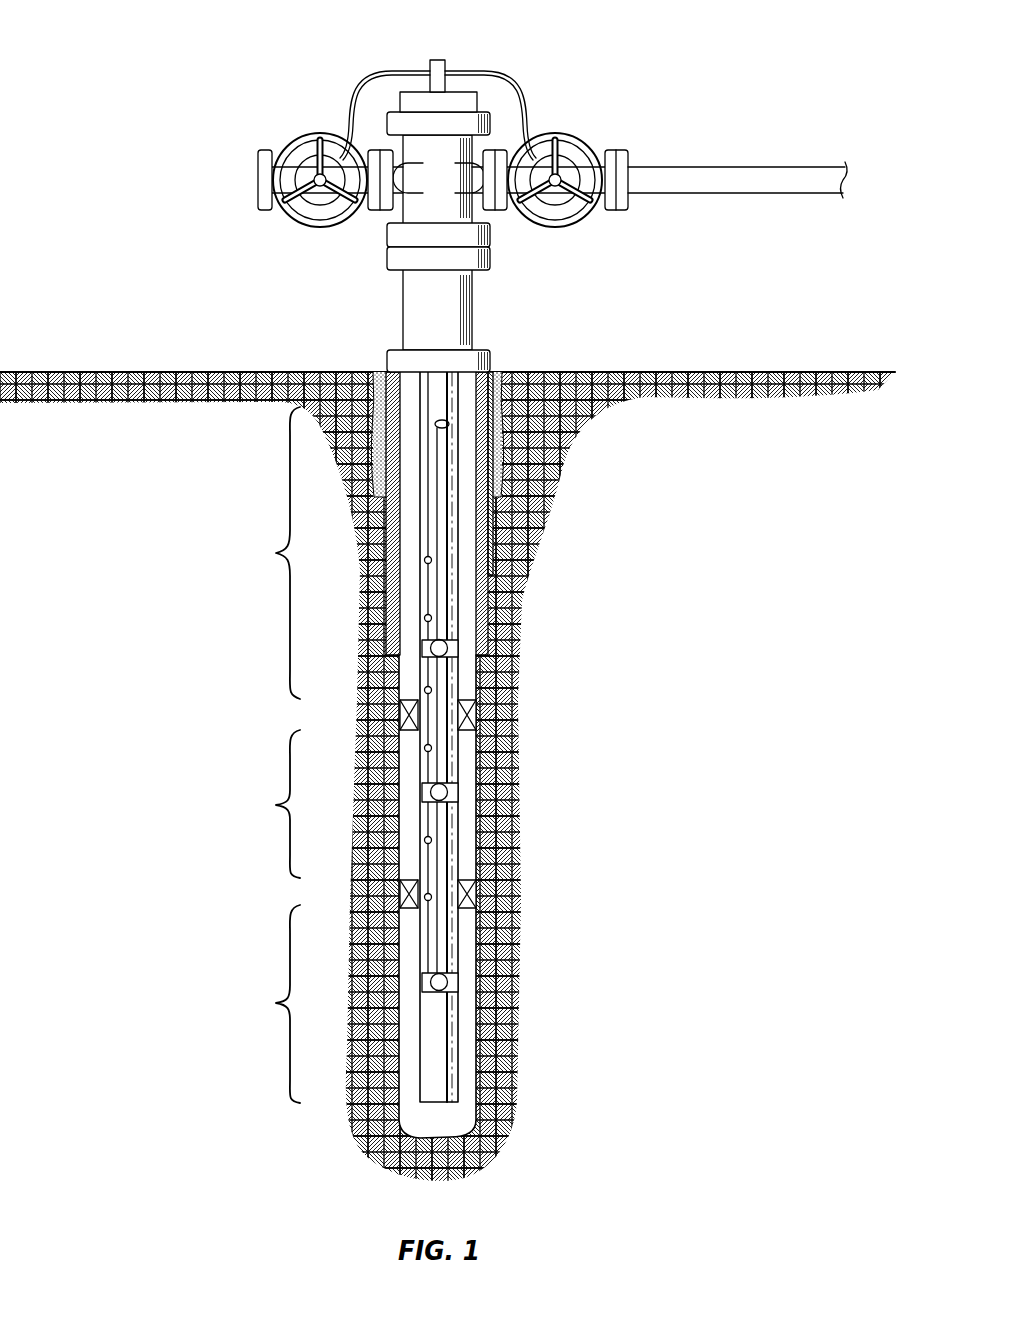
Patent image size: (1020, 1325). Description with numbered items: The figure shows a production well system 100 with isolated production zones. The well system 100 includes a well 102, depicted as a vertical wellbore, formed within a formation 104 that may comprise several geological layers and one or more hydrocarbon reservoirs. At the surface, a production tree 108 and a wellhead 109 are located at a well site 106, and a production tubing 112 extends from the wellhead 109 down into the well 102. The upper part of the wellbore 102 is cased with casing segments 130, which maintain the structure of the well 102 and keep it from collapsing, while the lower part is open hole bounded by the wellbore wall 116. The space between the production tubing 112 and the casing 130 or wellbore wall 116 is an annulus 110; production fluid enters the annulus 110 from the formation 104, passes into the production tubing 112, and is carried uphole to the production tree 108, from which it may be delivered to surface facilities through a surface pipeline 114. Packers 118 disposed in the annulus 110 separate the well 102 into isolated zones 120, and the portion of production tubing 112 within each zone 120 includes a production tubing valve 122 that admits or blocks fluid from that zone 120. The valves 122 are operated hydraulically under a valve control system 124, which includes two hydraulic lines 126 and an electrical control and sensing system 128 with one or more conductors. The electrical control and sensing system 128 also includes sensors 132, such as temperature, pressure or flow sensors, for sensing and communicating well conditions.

The production well system 100 is at (158, 38).
The well 102 is at (477, 663).
The formation 104 is at (736, 452).
The well site 106 is at (361, 350).
The production tree 108 is at (396, 232).
The wellhead 109 is at (462, 306).
The annulus 110 is at (470, 528).
The production tubing 112 is at (457, 397).
The surface pipeline 114 is at (792, 188).
The wellbore wall 116 is at (475, 690).
The packer 118 is at (475, 718).
The isolated zone 120 is at (266, 755).
The production tubing valve 122 is at (458, 647).
The valve control system 124 is at (452, 493).
The hydraulic line 126 is at (449, 424).
The electrical control and sensing system 128 is at (428, 453).
The casing segment 130 is at (490, 569).
The sensor 132 is at (424, 616).